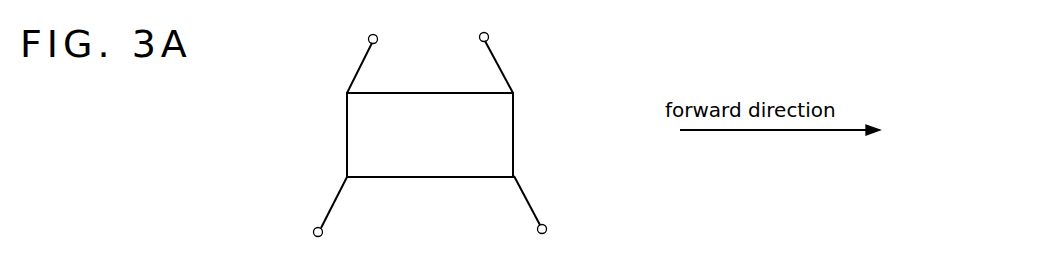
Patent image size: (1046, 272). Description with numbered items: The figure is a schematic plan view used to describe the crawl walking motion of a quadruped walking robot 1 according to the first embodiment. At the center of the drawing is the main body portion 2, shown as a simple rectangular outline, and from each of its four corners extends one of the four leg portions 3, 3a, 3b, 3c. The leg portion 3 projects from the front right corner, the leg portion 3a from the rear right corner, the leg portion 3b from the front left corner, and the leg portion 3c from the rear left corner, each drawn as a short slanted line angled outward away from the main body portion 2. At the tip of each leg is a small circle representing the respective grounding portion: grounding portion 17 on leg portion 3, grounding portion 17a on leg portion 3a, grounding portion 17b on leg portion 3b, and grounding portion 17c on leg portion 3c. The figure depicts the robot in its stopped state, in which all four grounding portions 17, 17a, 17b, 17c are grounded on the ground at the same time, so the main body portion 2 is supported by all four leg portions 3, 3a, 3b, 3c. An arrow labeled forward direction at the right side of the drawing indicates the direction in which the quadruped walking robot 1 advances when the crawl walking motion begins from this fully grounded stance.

The quadruped walking robot 1 is at (640, 42).
The main body portion 2 is at (416, 105).
The leg portion 3 is at (537, 72).
The leg portion 3a is at (547, 191).
The leg portion 3b is at (318, 78).
The leg portion 3c is at (320, 194).
The grounding portion 17 is at (489, 37).
The grounding portion 17a is at (547, 229).
The grounding portion 17b is at (368, 39).
The grounding portion 17c is at (313, 232).